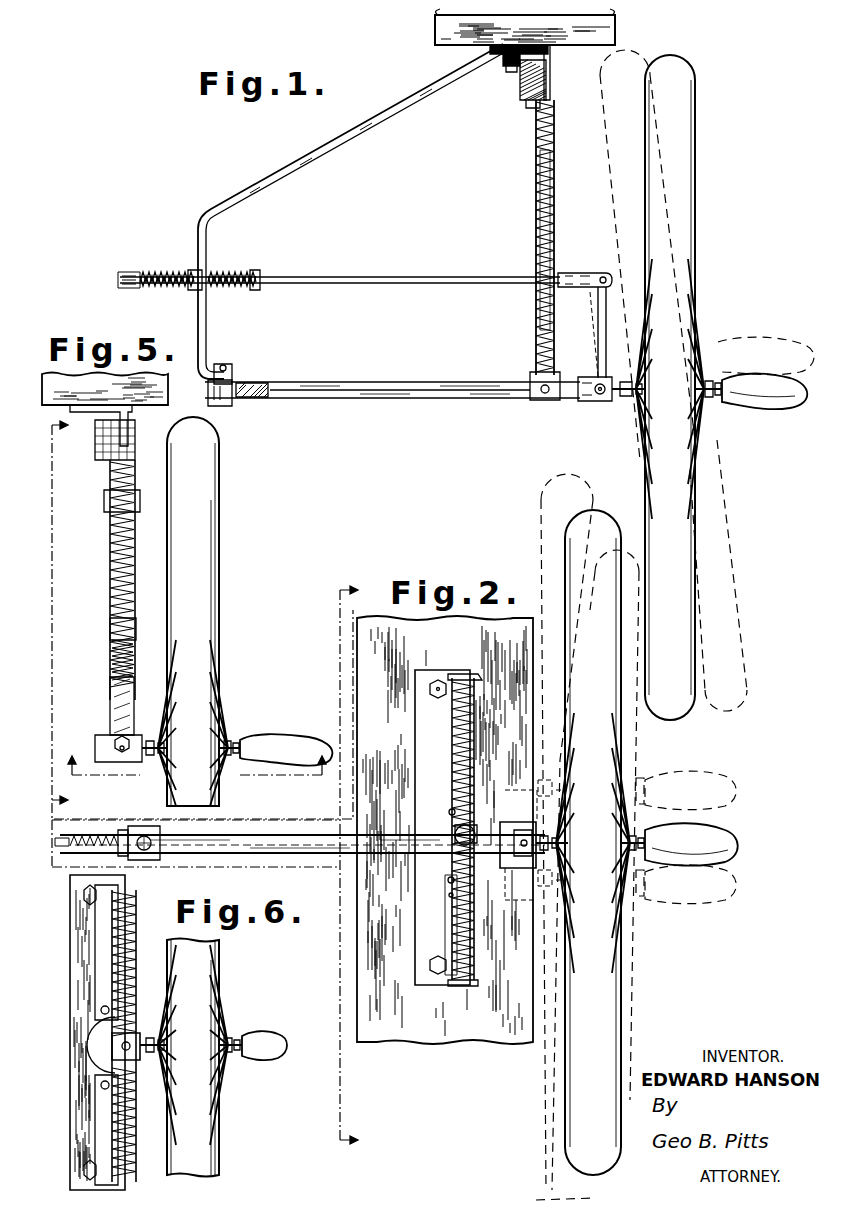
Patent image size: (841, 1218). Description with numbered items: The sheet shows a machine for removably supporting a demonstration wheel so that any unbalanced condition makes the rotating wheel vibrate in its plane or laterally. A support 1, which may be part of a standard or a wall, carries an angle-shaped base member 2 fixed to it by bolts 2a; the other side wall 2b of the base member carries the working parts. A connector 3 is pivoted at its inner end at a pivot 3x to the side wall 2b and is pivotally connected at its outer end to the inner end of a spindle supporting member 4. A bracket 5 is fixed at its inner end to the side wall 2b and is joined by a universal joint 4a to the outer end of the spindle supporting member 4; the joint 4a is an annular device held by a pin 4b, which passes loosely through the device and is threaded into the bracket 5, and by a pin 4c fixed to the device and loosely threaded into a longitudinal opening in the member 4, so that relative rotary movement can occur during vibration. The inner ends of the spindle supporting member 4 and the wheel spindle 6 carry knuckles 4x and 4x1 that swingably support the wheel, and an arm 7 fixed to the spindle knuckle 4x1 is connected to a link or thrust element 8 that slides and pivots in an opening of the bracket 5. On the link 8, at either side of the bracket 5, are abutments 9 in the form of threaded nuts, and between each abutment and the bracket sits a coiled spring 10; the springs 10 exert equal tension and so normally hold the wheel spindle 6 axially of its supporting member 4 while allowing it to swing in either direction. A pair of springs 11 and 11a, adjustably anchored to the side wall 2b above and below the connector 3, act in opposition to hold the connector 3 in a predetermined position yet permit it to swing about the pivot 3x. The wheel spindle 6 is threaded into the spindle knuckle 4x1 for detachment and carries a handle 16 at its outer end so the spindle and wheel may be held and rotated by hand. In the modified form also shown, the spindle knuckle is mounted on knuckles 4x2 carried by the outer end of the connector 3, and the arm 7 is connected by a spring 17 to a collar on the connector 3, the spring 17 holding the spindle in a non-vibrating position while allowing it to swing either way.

In FIG. 1, the support 1 is at (435, 38).
In FIG. 1, the base member 2 is at (492, 49).
In FIG. 2, the base member 2 is at (424, 678).
In FIG. 1, the bolts 2a is at (504, 62).
In FIG. 2, the bolts 2a is at (432, 694).
In FIG. 1, the side wall 2b is at (552, 60).
In FIG. 5, the side wall 2b is at (129, 416).
In FIG. 6, the side wall 2b is at (72, 940).
In FIG. 1, the connector 3 is at (536, 142).
In FIG. 2, the connector 3 is at (211, 866).
In FIG. 1, the pivot 3x is at (562, 92).
In FIG. 1, the spindle supporting member 4 is at (452, 398).
In FIG. 5, the spindle supporting member 4 is at (67, 614).
In FIG. 2, the spindle supporting member 4 is at (322, 856).
In FIG. 1, the universal joint 4a is at (208, 392).
In FIG. 1, the pin 4b is at (230, 366).
In FIG. 1, the pin 4c is at (262, 399).
In FIG. 1, the knuckle 4x is at (606, 402).
In FIG. 2, the knuckle 4x is at (518, 822).
In FIG. 2, the spindle knuckle 4x1 is at (510, 860).
In FIG. 6, the spindle knuckle 4x1 is at (112, 1052).
In FIG. 6, the knuckles 4x2 is at (140, 1024).
In FIG. 1, the bracket 5 is at (345, 135).
In FIG. 1, the wheel spindle 6 is at (630, 404).
In FIG. 5, the wheel spindle 6 is at (195, 772).
In FIG. 1, the arm 7 is at (598, 350).
In FIG. 1, the link or thrust element 8 is at (420, 284).
In FIG. 1, the abutments 9 is at (166, 278).
In FIG. 1, the coiled springs 10 is at (166, 290).
In FIG. 1, the spring 11 is at (556, 218).
In FIG. 5, the spring 11 is at (135, 562).
In FIG. 2, the spring 11 is at (476, 718).
In FIG. 6, the spring 11 is at (130, 938).
In FIG. 5, the spring 11a is at (134, 652).
In FIG. 2, the spring 11a is at (478, 920).
In FIG. 6, the spring 11a is at (130, 1142).
In FIG. 1, the handle 16 is at (762, 404).
In FIG. 5, the handle 16 is at (284, 738).
In FIG. 2, the handle 16 is at (734, 840).
In FIG. 6, the handle 16 is at (288, 1028).
In FIG. 5, the spring 17 is at (110, 628).